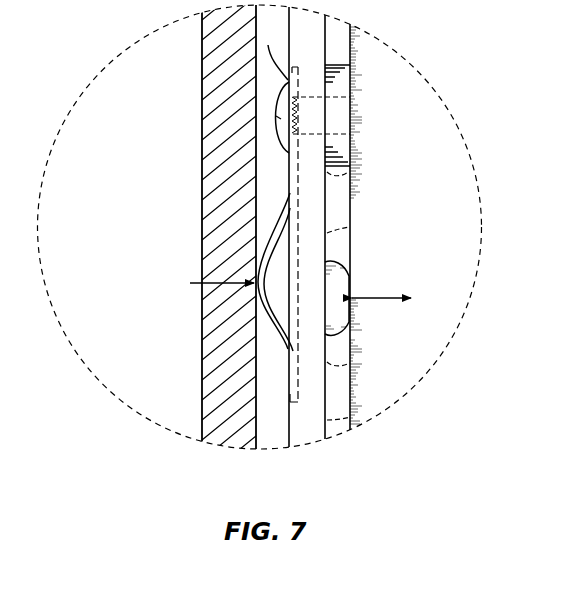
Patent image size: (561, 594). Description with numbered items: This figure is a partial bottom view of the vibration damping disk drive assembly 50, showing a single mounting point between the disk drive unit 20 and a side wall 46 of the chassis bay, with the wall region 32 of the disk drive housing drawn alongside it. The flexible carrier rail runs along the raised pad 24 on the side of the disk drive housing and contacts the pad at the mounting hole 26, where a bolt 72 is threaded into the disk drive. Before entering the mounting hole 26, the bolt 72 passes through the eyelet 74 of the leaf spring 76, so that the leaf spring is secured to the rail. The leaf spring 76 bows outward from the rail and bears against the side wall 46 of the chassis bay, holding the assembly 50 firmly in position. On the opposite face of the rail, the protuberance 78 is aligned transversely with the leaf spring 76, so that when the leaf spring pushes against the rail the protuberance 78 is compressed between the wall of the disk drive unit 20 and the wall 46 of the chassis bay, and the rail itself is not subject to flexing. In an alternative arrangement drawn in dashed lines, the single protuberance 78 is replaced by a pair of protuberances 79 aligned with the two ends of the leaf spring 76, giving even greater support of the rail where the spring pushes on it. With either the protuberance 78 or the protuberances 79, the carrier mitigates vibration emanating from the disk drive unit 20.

The disk drive unit 20 is at (466, 238).
The raised pad 24 is at (332, 90).
The mounting hole 26 is at (337, 122).
The core 32 is at (322, 247).
The side wall 46 is at (215, 77).
The vibration damping disk drive assembly 50 is at (128, 92).
The bolt 72 is at (274, 227).
The eyelet 74 is at (290, 135).
The leaf spring 76 is at (266, 254).
The protuberance 78 is at (338, 297).
The pair of protuberances 79 is at (337, 188).